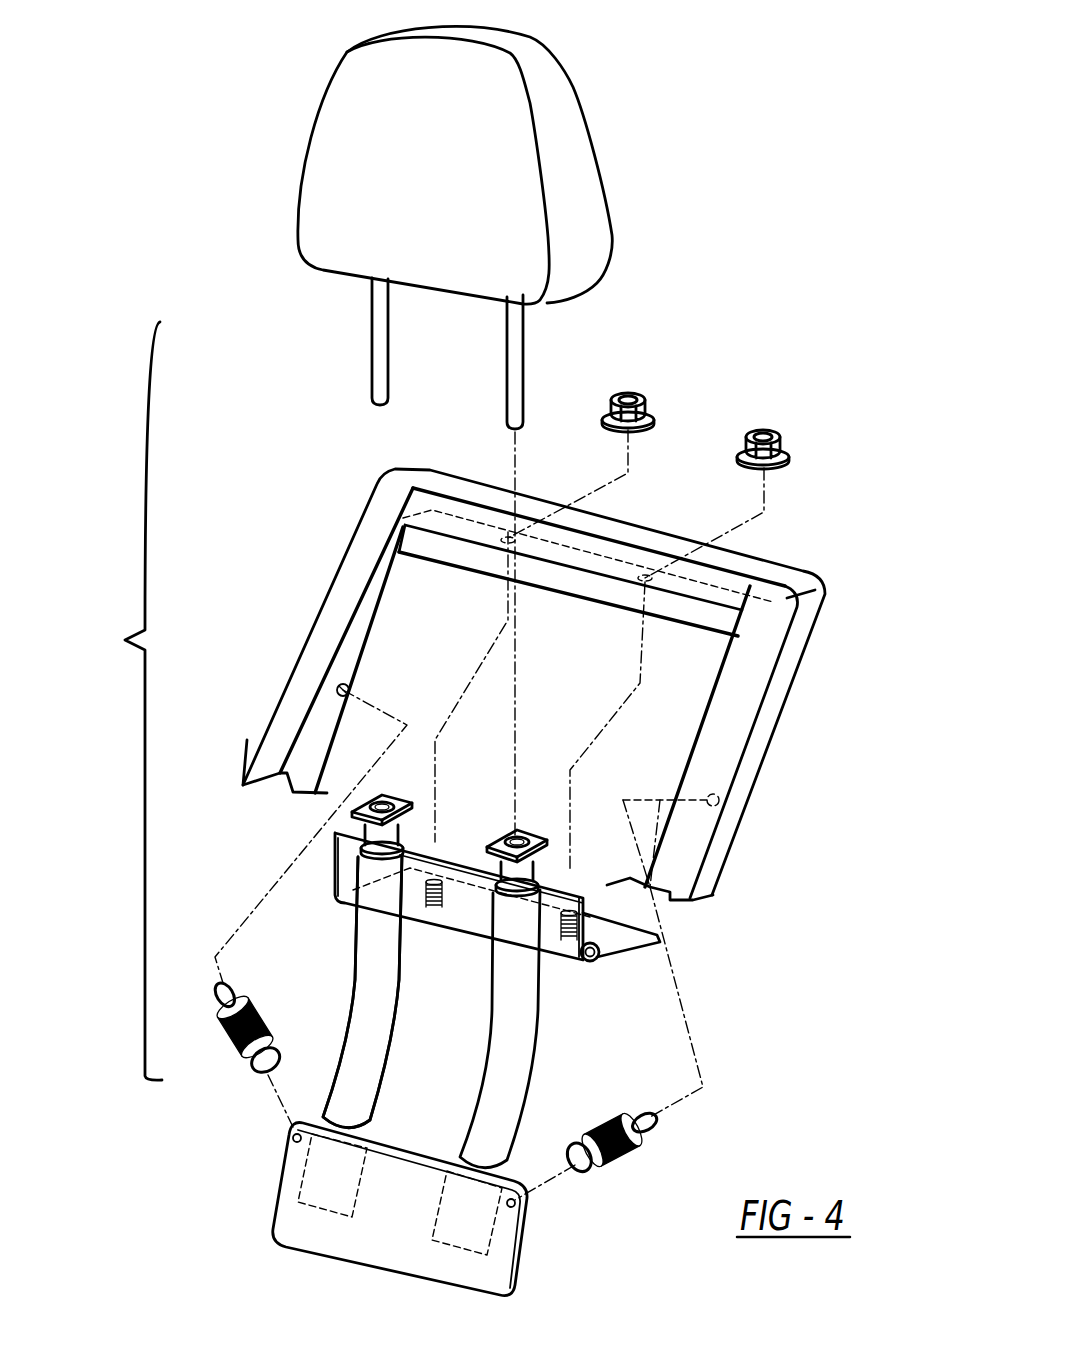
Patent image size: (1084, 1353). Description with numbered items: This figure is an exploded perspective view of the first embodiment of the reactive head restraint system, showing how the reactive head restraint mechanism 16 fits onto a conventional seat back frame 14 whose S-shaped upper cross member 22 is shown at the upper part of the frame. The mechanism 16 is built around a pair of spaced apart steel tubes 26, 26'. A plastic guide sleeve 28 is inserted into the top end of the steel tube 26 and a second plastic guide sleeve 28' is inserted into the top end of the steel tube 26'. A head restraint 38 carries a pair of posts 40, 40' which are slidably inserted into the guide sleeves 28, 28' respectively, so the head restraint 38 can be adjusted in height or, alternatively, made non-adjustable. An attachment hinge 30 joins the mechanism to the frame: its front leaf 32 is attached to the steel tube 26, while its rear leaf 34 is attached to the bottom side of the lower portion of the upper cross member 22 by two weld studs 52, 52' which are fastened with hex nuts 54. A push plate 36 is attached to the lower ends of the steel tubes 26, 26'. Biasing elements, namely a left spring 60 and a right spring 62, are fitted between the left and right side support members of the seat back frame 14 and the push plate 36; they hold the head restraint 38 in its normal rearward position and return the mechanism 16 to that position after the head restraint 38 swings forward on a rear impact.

The seat back frame 14 is at (762, 697).
The reactive head restraint mechanism 16 is at (360, 1038).
The upper cross member 22 is at (427, 540).
The steel tube 26 is at (347, 991).
The steel tube 26' is at (534, 1029).
The plastic guide sleeve 28 is at (324, 827).
The plastic guide sleeve 28' is at (551, 863).
The attachment hinge 30 is at (617, 957).
The front leaf 32 is at (340, 872).
The rear leaf 34 is at (650, 947).
The push plate 36 is at (380, 1243).
The head restraint 38 is at (572, 130).
The post 40 is at (333, 341).
The post 40' is at (571, 362).
The weld stud 52 is at (458, 848).
The weld stud 52' is at (660, 927).
The hex nut 54 is at (650, 400).
The left spring 60 is at (225, 1038).
The right spring 62 is at (623, 1157).